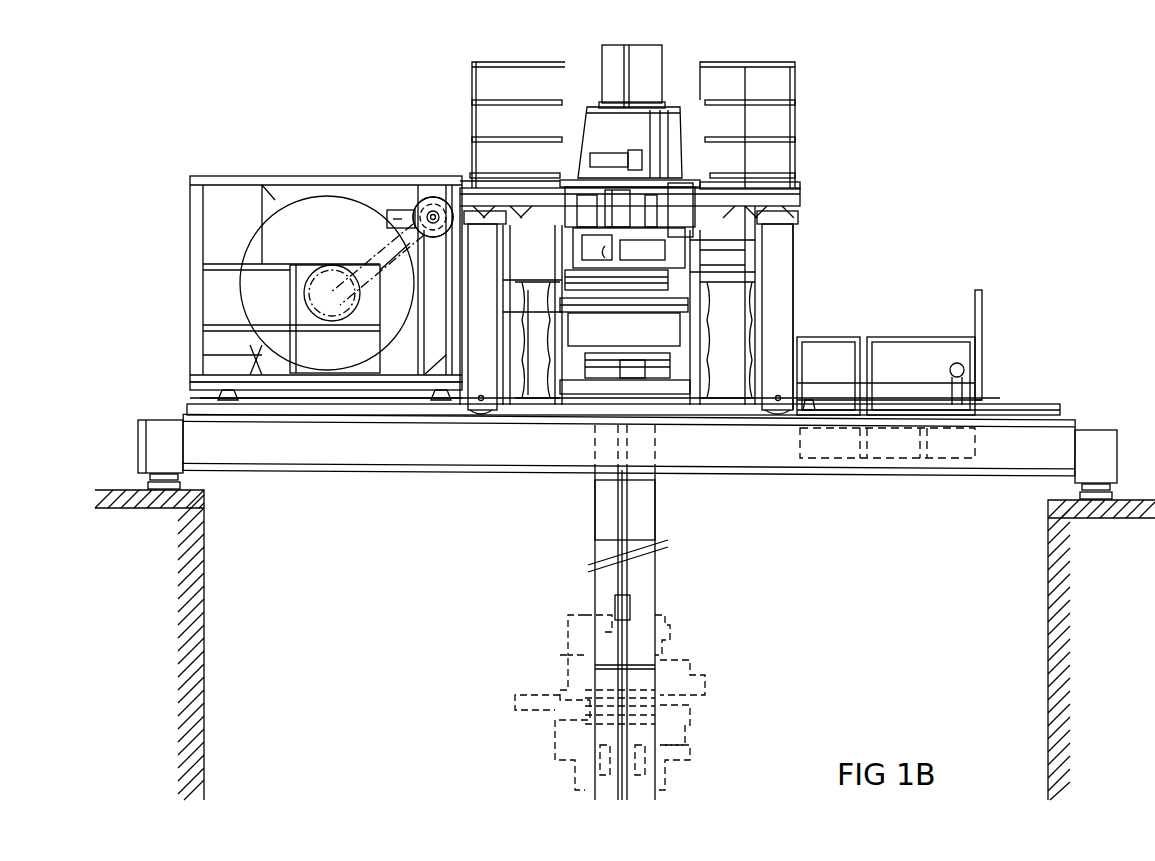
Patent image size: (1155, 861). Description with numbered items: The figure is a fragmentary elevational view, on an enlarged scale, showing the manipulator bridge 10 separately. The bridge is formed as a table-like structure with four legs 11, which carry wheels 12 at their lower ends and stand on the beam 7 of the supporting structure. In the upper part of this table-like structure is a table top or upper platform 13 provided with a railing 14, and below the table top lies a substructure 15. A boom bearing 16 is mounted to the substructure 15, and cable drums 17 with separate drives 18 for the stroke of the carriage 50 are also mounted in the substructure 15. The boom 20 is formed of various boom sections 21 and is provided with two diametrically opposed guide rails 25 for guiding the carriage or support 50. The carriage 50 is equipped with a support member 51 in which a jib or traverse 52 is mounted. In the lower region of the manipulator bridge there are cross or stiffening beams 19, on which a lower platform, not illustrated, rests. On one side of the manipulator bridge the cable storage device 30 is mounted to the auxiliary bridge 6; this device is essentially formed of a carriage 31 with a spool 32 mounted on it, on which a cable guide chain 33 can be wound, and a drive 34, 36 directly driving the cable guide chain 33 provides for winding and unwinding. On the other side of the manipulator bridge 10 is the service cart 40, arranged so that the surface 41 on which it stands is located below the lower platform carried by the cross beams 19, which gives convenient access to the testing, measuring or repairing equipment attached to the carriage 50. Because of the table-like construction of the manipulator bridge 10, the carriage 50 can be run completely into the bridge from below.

The auxiliary bridge 6 is at (152, 443).
The beam 7 is at (320, 466).
The manipulator bridge 10 is at (795, 218).
The legs 11 is at (795, 290).
The wheels 12 is at (470, 415).
The table top or upper platform 13 is at (790, 180).
The railing 14 is at (796, 89).
The substructure 15 is at (540, 192).
The boom bearing 16 is at (668, 120).
The cable drums 17 is at (640, 185).
The drives 18 is at (700, 192).
The cross or stiffening beams 19 is at (575, 400).
The boom 20 is at (696, 579).
The boom sections 21 is at (602, 580).
The guide rails 25 is at (630, 612).
The cable storage device 30 is at (322, 212).
The carriage 31 is at (208, 380).
The spool 32 is at (245, 290).
The cable guide chain 33 is at (405, 208).
The drive 34 is at (430, 200).
The drive 36 is at (433, 217).
The service cart 40 is at (893, 390).
The surface 41 is at (885, 465).
The carriage 50 is at (683, 277).
The support member 51 is at (668, 340).
The jib or traverse 52 is at (540, 400).